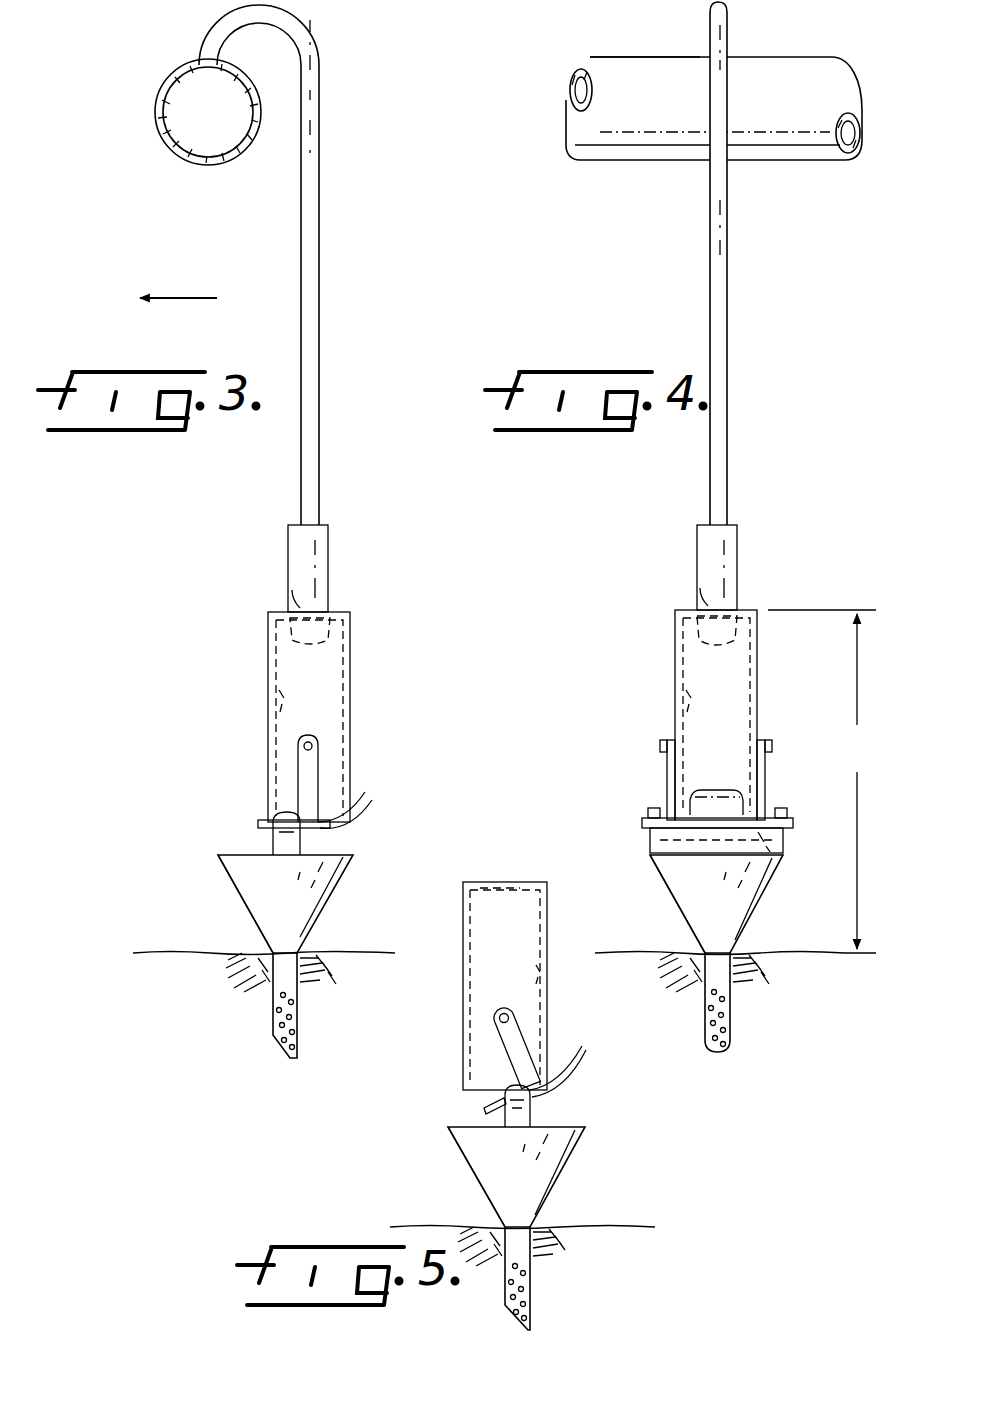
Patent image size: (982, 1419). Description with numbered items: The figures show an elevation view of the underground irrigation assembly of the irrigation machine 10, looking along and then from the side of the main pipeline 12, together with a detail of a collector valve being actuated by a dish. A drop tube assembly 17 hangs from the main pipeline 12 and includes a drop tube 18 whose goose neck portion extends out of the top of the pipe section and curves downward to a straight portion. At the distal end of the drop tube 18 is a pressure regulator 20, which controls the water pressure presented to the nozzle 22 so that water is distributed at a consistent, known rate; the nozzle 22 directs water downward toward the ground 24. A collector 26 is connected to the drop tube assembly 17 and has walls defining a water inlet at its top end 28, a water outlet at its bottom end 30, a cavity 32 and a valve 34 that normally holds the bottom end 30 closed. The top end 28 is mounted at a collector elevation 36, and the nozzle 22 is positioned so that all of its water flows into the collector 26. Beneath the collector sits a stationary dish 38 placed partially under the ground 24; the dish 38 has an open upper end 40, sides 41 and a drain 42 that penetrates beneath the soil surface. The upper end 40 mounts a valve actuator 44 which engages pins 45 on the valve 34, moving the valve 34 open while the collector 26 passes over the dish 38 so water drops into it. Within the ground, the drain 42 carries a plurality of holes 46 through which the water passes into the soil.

In FIG. 3, the irrigation machine 10 is at (178, 60).
In FIG. 4, the irrigation machine 10 is at (677, 48).
In FIG. 3, the main pipeline 12 is at (172, 150).
In FIG. 4, the main pipeline 12 is at (800, 150).
In FIG. 3, the drop tube assembly 17 is at (350, 126).
In FIG. 4, the drop tube assembly 17 is at (751, 406).
In FIG. 3, the drop tube 18 is at (320, 258).
In FIG. 4, the drop tube 18 is at (710, 305).
In FIG. 3, the pressure regulator 20 is at (328, 568).
In FIG. 4, the pressure regulator 20 is at (737, 558).
In FIG. 3, the nozzle 22 is at (276, 645).
In FIG. 4, the nozzle 22 is at (683, 645).
In FIG. 3, the ground 24 is at (168, 953).
In FIG. 4, the ground 24 is at (628, 953).
In FIG. 5, the ground 24 is at (630, 1227).
In FIG. 3, the collector 26 is at (350, 690).
In FIG. 4, the collector 26 is at (757, 690).
In FIG. 5, the collector 26 is at (463, 993).
In FIG. 3, the top end 28 is at (298, 608).
In FIG. 4, the top end 28 is at (700, 605).
In FIG. 5, the top end 28 is at (498, 882).
In FIG. 3, the bottom end 30 is at (335, 822).
In FIG. 4, the bottom end 30 is at (770, 866).
In FIG. 5, the bottom end 30 is at (478, 1093).
In FIG. 3, the cavity 32 is at (268, 718).
In FIG. 4, the cavity 32 is at (672, 712).
In FIG. 5, the cavity 32 is at (547, 985).
In FIG. 3, the valve 34 is at (262, 822).
In FIG. 4, the valve 34 is at (668, 850).
In FIG. 5, the valve 34 is at (582, 1046).
In FIG. 4, the collector elevation 36 is at (823, 781).
In FIG. 3, the dish 38 is at (342, 895).
In FIG. 4, the dish 38 is at (767, 898).
In FIG. 5, the dish 38 is at (562, 1180).
In FIG. 3, the open upper end 40 is at (228, 853).
In FIG. 4, the open upper end 40 is at (665, 862).
In FIG. 5, the open upper end 40 is at (516, 1177).
In FIG. 3, the sides 41 is at (250, 908).
In FIG. 4, the sides 41 is at (688, 905).
In FIG. 5, the sides 41 is at (475, 1180).
In FIG. 3, the drain 42 is at (285, 1047).
In FIG. 4, the drain 42 is at (722, 1045).
In FIG. 5, the drain 42 is at (530, 1325).
In FIG. 3, the valve actuator 44 is at (290, 825).
In FIG. 4, the valve actuator 44 is at (655, 815).
In FIG. 5, the valve actuator 44 is at (522, 1116).
In FIG. 3, the pins 45 is at (345, 790).
In FIG. 4, the pins 45 is at (655, 822).
In FIG. 5, the pins 45 is at (558, 1090).
In FIG. 3, the holes 46 is at (272, 1013).
In FIG. 4, the holes 46 is at (715, 1018).
In FIG. 5, the holes 46 is at (510, 1291).